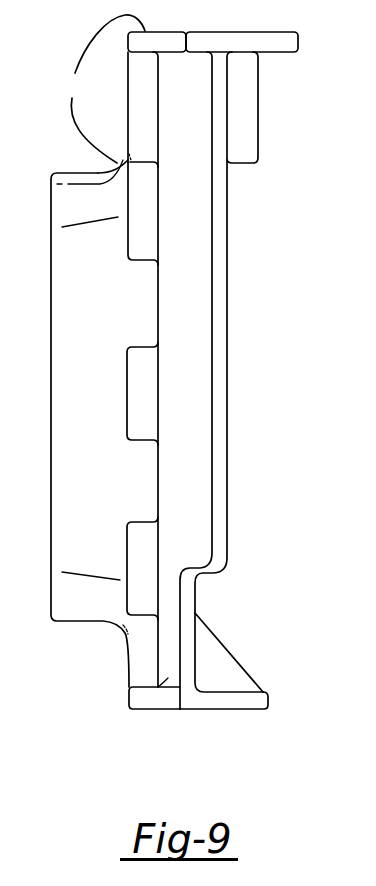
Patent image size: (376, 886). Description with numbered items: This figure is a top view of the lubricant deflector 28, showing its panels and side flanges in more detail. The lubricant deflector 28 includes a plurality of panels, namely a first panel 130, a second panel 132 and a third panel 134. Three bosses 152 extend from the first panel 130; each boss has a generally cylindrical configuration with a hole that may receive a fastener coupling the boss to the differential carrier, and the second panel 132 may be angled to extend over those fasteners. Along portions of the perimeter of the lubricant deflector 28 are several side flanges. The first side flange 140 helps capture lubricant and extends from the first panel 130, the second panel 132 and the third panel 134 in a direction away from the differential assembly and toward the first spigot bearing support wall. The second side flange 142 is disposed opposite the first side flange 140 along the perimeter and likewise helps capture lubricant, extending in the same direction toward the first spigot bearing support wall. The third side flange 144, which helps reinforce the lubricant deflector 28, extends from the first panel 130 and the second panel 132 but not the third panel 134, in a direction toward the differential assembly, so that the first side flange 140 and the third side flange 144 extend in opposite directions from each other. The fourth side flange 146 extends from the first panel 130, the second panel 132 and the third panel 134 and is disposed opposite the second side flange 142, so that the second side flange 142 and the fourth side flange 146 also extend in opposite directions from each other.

The lubricant deflector 28 is at (219, 370).
The first panel 130 is at (83, 369).
The second panel 132 is at (255, 372).
The third panel 134 is at (69, 423).
The first side flange 140 is at (100, 99).
The second side flange 142 is at (68, 656).
The third side flange 144 is at (271, 100).
The fourth side flange 146 is at (248, 661).
The bosses 152 is at (83, 391).